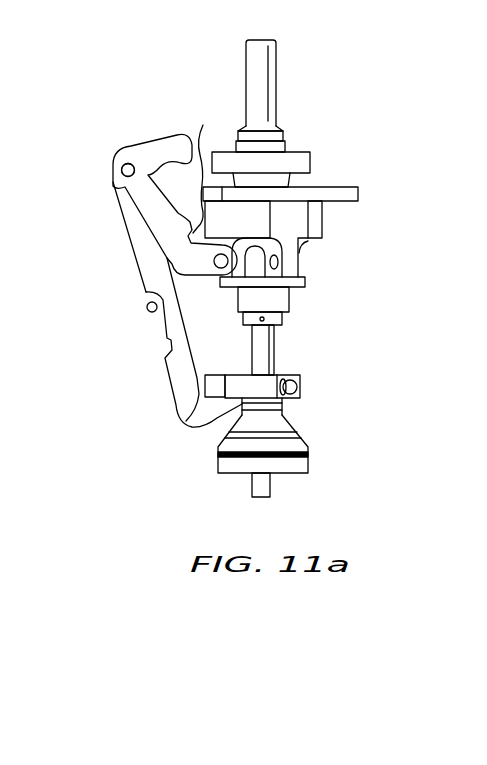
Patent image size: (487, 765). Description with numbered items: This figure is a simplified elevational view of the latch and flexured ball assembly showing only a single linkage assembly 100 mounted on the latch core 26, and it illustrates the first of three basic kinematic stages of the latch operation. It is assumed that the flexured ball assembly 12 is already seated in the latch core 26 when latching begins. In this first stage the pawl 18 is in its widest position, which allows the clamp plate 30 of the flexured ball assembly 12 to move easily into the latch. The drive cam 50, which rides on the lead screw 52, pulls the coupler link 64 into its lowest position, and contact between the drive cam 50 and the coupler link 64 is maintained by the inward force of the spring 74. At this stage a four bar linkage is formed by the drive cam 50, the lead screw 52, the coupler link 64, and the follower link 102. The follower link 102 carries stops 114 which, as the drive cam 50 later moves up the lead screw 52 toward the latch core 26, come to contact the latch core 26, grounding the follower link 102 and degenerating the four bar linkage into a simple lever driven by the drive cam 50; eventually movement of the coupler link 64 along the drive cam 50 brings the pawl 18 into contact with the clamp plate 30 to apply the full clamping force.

The flexured ball assembly 12 is at (310, 32).
The clamp plate 30 is at (312, 162).
The latch core 26 is at (323, 218).
The pawl 18 is at (190, 142).
The stops 114 is at (200, 152).
The coupler link 64 is at (112, 176).
The follower link 102 is at (130, 226).
The linkage assembly 100 is at (88, 214).
The spring 74 is at (150, 313).
The drive cam 50 is at (218, 466).
The lead screw 52 is at (277, 478).